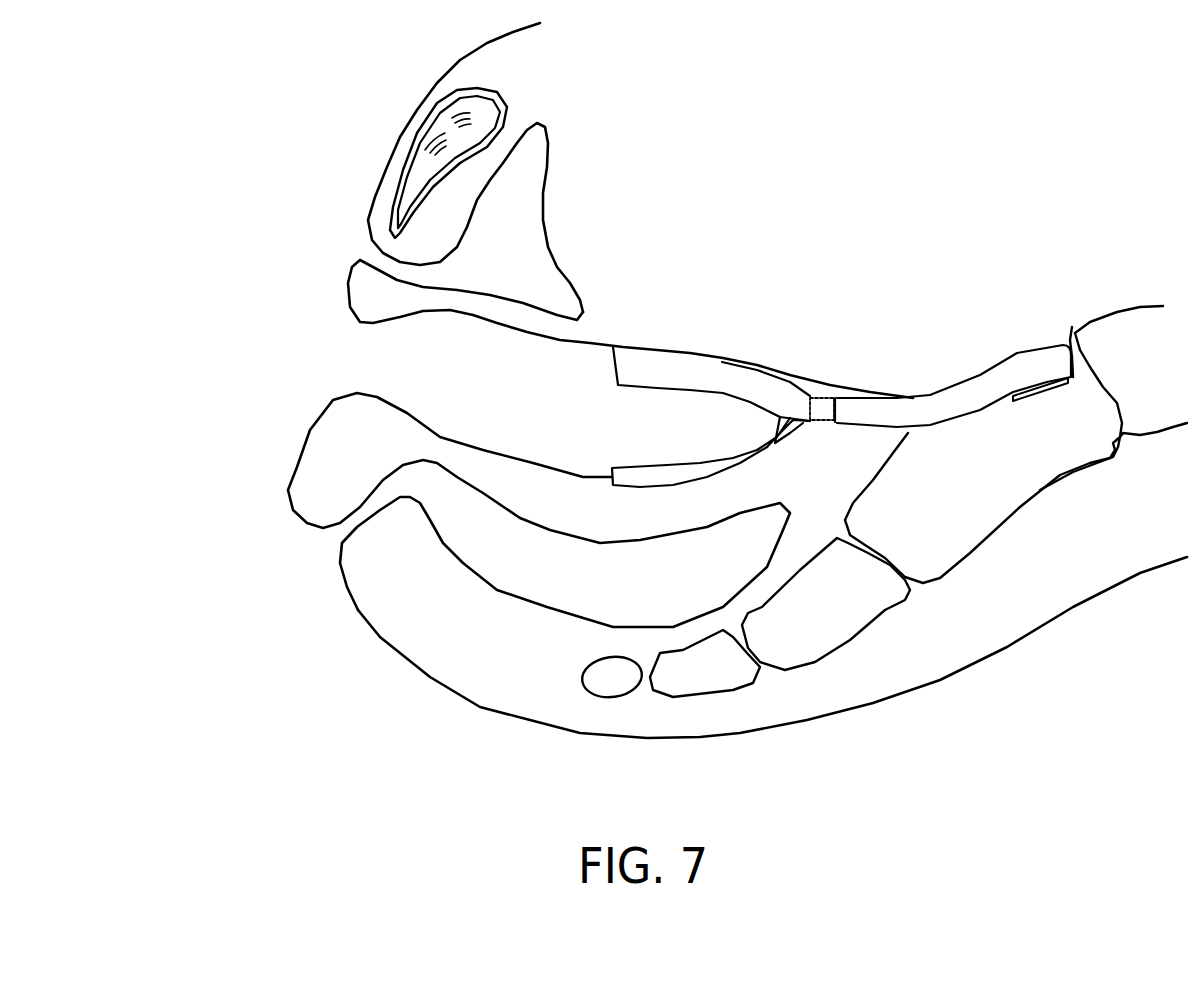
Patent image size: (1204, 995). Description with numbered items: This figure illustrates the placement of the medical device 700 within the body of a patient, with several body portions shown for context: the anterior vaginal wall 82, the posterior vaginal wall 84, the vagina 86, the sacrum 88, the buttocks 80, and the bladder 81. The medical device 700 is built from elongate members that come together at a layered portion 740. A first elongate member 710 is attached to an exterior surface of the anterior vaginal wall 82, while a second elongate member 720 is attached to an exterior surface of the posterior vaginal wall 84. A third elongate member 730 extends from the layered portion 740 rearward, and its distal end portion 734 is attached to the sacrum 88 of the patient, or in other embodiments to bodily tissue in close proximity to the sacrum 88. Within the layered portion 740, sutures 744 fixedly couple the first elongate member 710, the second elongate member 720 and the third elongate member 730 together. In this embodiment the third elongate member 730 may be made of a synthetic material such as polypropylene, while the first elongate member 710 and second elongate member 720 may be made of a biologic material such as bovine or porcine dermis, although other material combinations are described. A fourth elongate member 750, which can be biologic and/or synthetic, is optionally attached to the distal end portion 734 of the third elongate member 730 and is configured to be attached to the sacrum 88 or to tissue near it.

The buttocks 80 is at (522, 662).
The bladder 81 is at (533, 150).
The anterior vaginal wall 82 is at (590, 343).
The posterior vaginal wall 84 is at (530, 463).
The vagina 86 is at (401, 363).
The sacrum 88 is at (1072, 327).
The medical device 700 is at (850, 379).
The first elongate member 710 is at (722, 382).
The second elongate member 720 is at (662, 470).
The third elongate member 730 is at (947, 410).
The distal end portion 734 is at (1034, 356).
The layered portion 740 is at (821, 385).
The sutures 744 is at (823, 421).
The fourth elongate member 750 is at (1055, 383).